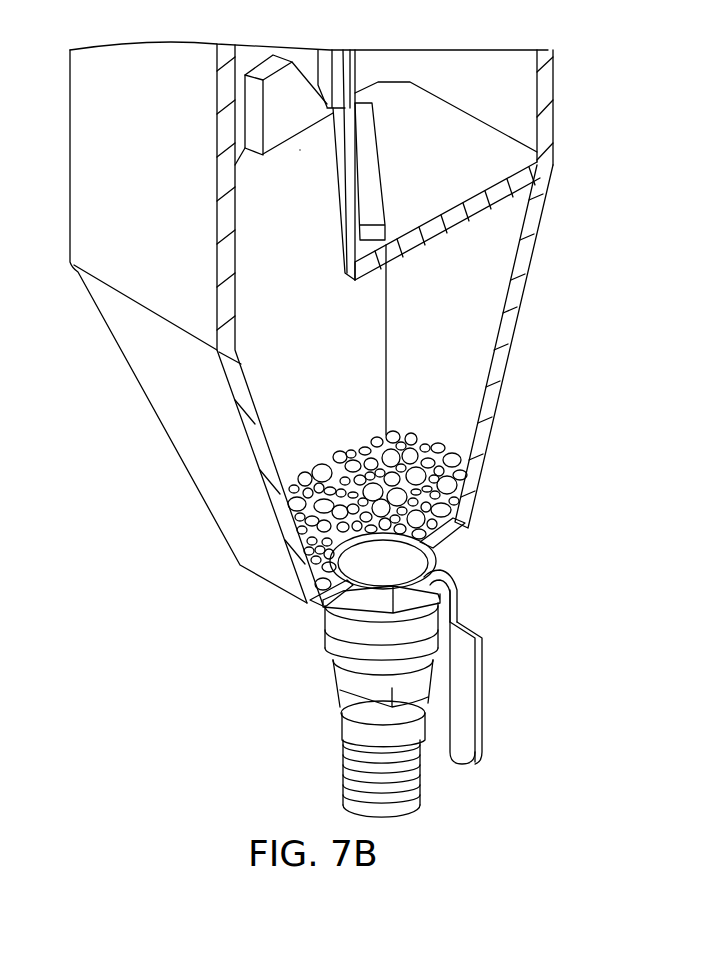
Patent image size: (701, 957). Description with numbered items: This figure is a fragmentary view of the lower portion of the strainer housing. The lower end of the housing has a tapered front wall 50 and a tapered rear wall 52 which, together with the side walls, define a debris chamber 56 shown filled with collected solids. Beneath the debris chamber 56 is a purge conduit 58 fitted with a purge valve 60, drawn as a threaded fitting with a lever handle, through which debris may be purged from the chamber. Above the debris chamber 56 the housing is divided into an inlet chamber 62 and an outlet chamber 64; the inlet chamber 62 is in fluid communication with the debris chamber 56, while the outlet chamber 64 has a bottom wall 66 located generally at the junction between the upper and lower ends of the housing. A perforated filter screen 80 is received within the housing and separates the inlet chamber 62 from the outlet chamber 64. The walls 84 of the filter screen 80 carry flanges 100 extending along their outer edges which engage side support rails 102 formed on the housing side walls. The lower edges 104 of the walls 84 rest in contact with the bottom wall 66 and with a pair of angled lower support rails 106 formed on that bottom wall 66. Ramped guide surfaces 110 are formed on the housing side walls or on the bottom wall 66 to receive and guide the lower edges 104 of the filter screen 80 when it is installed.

The front wall 50 is at (152, 372).
The rear wall 52 is at (524, 258).
The debris chamber 56 is at (414, 405).
The purge conduit 58 is at (356, 711).
The purge valve 60 is at (478, 596).
The inlet chamber 62 is at (255, 180).
The outlet chamber 64 is at (480, 85).
The bottom wall 66 is at (432, 212).
The filter screen 80 is at (316, 180).
The walls 84 is at (300, 194).
The flanges 100 is at (325, 62).
The side support rails 102 is at (352, 62).
The lower edges 104 is at (350, 243).
The lower support rails 106 is at (366, 128).
The ramped guide surfaces 110 is at (306, 70).